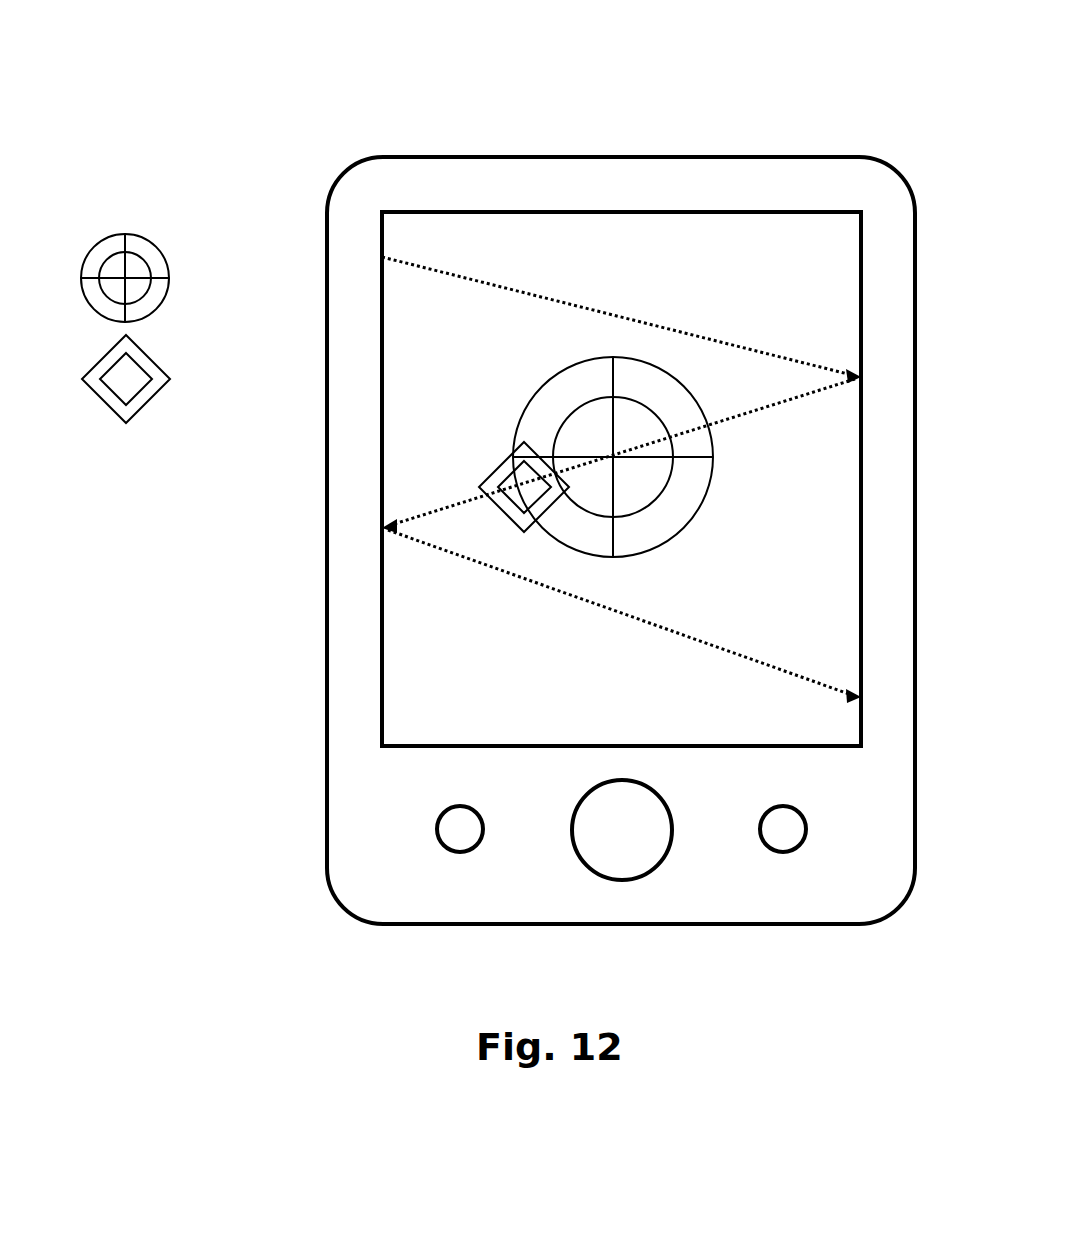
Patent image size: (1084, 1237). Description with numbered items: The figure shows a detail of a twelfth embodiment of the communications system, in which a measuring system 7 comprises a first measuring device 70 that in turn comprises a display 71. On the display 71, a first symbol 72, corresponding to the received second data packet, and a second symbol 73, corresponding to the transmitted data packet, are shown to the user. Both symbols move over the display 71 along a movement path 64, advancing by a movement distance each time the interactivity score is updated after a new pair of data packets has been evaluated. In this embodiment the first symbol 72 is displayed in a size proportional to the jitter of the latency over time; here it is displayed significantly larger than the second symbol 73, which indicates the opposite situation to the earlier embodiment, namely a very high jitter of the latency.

The measuring system 7 is at (621, 462).
The first measuring device 70 is at (822, 157).
The display 71 is at (744, 212).
The first symbol 72 is at (149, 192).
The second symbol 73 is at (145, 457).
The movement path 64 is at (580, 630).